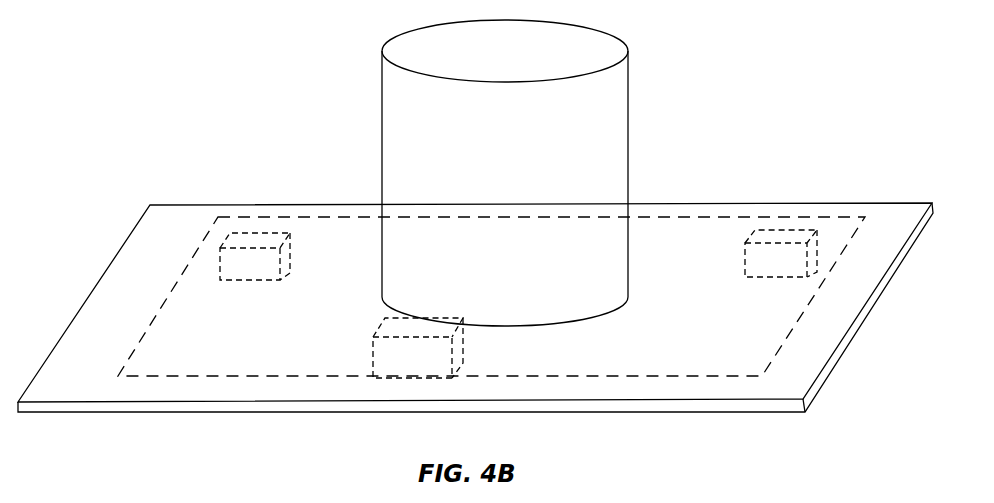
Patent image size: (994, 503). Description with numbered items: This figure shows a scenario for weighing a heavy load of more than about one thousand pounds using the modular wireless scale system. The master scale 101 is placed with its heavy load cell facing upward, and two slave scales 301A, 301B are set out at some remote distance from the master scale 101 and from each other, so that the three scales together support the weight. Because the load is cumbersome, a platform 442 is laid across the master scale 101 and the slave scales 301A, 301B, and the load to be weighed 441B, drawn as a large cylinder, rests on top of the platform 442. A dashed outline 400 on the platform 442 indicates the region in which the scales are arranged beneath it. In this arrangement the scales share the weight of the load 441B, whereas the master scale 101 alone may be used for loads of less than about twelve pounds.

The substrate plate 442 is at (836, 357).
The region 400 is at (304, 213).
The load to be weighed 441B is at (628, 100).
The slave scale 301A is at (228, 280).
The slave scale 301B is at (778, 277).
The master scale 101 is at (373, 360).